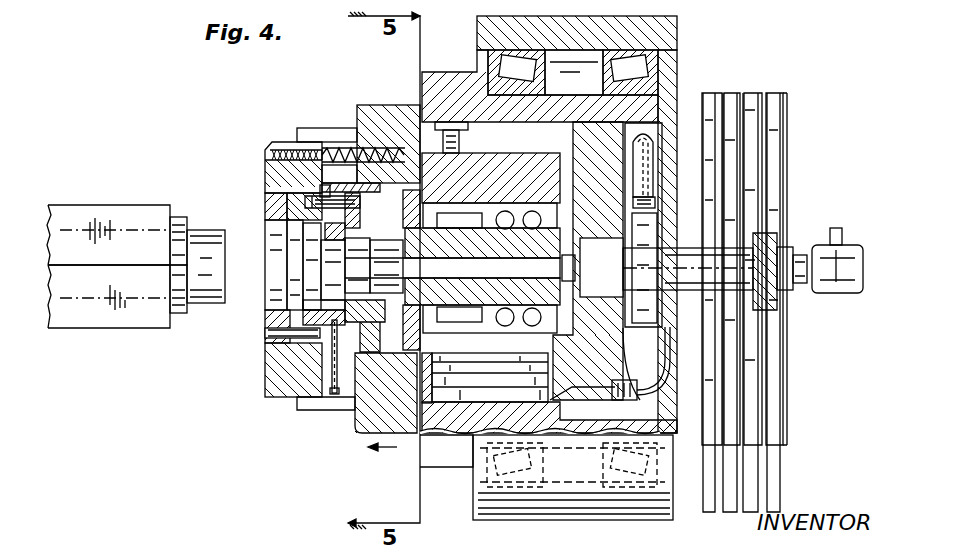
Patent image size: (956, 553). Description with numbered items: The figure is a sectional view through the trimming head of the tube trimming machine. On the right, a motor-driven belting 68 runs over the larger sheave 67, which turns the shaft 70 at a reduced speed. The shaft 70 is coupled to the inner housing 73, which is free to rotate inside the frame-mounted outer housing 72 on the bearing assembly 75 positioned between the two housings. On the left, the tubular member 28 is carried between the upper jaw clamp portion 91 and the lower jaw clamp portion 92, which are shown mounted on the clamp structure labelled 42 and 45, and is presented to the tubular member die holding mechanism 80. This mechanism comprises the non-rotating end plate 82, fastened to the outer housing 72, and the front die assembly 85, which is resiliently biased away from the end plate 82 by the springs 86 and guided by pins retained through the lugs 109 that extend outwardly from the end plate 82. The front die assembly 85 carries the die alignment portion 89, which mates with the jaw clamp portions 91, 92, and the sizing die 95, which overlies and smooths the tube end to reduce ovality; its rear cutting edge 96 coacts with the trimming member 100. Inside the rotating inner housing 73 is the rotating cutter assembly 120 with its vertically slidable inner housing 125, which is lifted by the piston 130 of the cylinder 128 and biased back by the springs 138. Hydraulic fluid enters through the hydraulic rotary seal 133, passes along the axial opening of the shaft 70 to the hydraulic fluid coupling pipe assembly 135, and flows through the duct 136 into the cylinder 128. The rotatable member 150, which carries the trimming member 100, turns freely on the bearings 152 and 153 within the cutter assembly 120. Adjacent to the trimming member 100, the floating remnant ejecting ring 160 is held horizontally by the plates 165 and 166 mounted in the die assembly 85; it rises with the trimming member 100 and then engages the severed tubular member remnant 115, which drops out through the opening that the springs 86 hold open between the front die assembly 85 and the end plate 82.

The input shaft upper half 42 is at (140, 218).
The input shaft lower half 45 is at (142, 318).
The upper jaw clamp portion 91 is at (181, 219).
The lower jaw clamp portion 92 is at (180, 314).
The tubular member 28 is at (207, 286).
The tubular member die holding mechanism 80 is at (310, 112).
The lug 109 is at (323, 128).
The spring 86 is at (345, 147).
The end plate 82 is at (387, 117).
The floating remnant ejecting ring 160 is at (351, 177).
The die alignment portion 89 is at (275, 215).
The sizing die 95 is at (330, 231).
The rear cutting edge 96 is at (337, 226).
The plate 165 is at (340, 226).
The plate 166 is at (362, 210).
The trimming member 100 is at (352, 258).
The rotating cutter assembly 120 is at (396, 300).
The front die assembly 85 is at (280, 378).
The tubular member remnant 115 is at (331, 385).
The outer housing 72 is at (658, 35).
The inner housing 73 is at (470, 97).
The bearing assembly 75 is at (630, 72).
The spring 138 is at (460, 143).
The vertically slidable inner housing 125 is at (513, 167).
The bearing 153 is at (460, 215).
The bearing 152 is at (537, 218).
The rotatable member 150 is at (555, 292).
The piston 130 is at (450, 395).
The cylinder 128 is at (468, 435).
The duct 136 is at (595, 393).
The hydraulic fluid coupling pipe assembly 135 is at (703, 207).
The shaft 70 is at (695, 280).
The sheave 67 is at (787, 143).
The belting 68 is at (775, 480).
The hydraulic rotary seal 133 is at (847, 292).